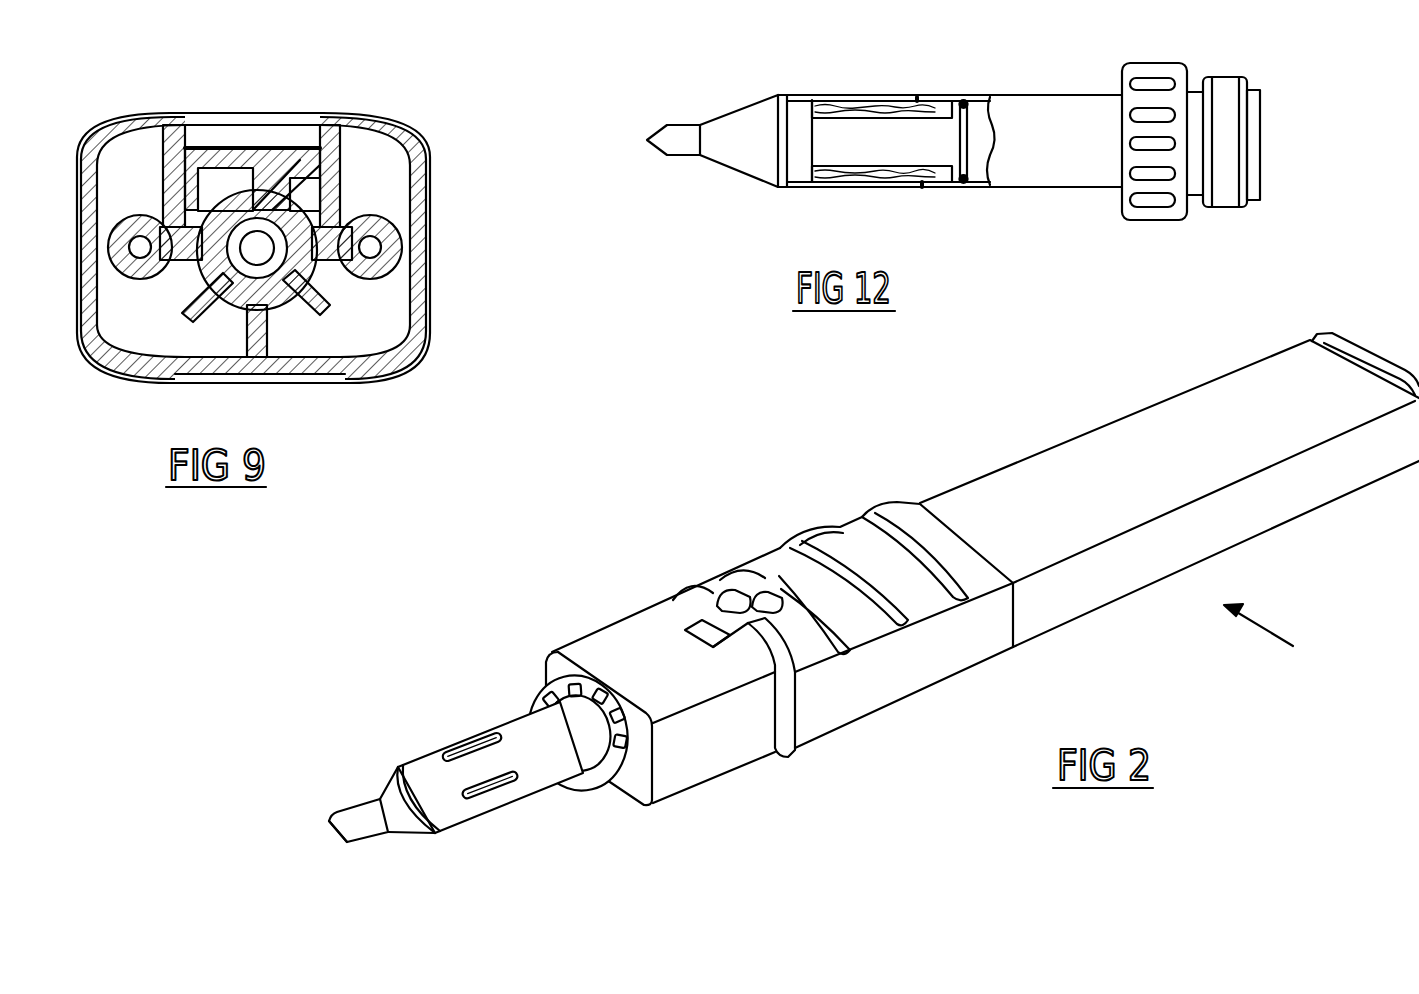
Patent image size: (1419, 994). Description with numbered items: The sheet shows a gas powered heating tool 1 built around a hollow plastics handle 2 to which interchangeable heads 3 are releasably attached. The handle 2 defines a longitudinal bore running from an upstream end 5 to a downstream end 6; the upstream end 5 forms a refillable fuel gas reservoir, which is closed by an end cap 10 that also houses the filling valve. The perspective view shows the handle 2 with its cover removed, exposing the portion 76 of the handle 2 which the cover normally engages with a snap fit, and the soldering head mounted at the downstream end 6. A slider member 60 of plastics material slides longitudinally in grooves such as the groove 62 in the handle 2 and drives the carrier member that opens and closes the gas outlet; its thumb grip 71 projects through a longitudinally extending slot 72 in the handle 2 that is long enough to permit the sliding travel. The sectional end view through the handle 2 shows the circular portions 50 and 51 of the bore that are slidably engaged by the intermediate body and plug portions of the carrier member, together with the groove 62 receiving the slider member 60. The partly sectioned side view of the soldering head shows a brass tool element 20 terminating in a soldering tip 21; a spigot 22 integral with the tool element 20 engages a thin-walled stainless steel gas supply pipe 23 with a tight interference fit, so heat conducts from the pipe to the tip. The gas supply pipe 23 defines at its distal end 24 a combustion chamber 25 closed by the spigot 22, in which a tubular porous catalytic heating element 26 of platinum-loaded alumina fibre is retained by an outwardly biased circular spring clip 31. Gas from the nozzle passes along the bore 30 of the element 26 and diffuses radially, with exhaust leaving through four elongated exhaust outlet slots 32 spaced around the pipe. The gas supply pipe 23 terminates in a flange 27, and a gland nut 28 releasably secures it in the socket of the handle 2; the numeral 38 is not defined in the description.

In FIG. 2, the gas powered heating tool 1 is at (1273, 638).
In FIG. 9, the handle 2 is at (414, 172).
In FIG. 2, the handle 2 is at (1247, 517).
In FIG. 2, the interchangeable heads 3 is at (530, 775).
In FIG. 2, the upstream end 5 is at (1372, 462).
In FIG. 2, the downstream end 6 is at (640, 790).
In FIG. 2, the end cap 10 is at (1357, 353).
In FIG. 12, the tool element 20 is at (750, 120).
In FIG. 2, the tool element 20 is at (412, 817).
In FIG. 12, the soldering tip 21 is at (679, 146).
In FIG. 2, the soldering tip 21 is at (362, 810).
In FIG. 12, the spigot 22 is at (798, 170).
In FIG. 12, the gas supply pipe 23 is at (1047, 180).
In FIG. 2, the gas supply pipe 23 is at (515, 723).
In FIG. 12, the distal end 24 is at (863, 187).
In FIG. 2, the distal end 24 is at (427, 758).
In FIG. 12, the combustion chamber 25 is at (855, 153).
In FIG. 12, the porous catalytic heating element 26 is at (875, 108).
In FIG. 12, the flange 27 is at (1255, 90).
In FIG. 12, the gland nut 28 is at (1155, 203).
In FIG. 2, the gland nut 28 is at (590, 777).
In FIG. 12, the bore 30 is at (847, 127).
In FIG. 12, the circular spring clip 31 is at (965, 127).
In FIG. 12, the exhaust outlet slots 32 is at (917, 97).
In FIG. 2, the exhaust outlet slots 32 is at (465, 740).
In FIG. 12, the tube wall 38 is at (1028, 100).
In FIG. 9, the circular portion of the bore 50 is at (240, 300).
In FIG. 9, the circular portion of the bore 51 is at (273, 257).
In FIG. 9, the slider member 60 is at (255, 152).
In FIG. 2, the slider member 60 is at (750, 603).
In FIG. 9, the longitudinal groove 62 is at (345, 135).
In FIG. 2, the thumb grip 71 is at (760, 603).
In FIG. 2, the slot 72 is at (695, 622).
In FIG. 2, the portion of the handle 76 is at (732, 757).